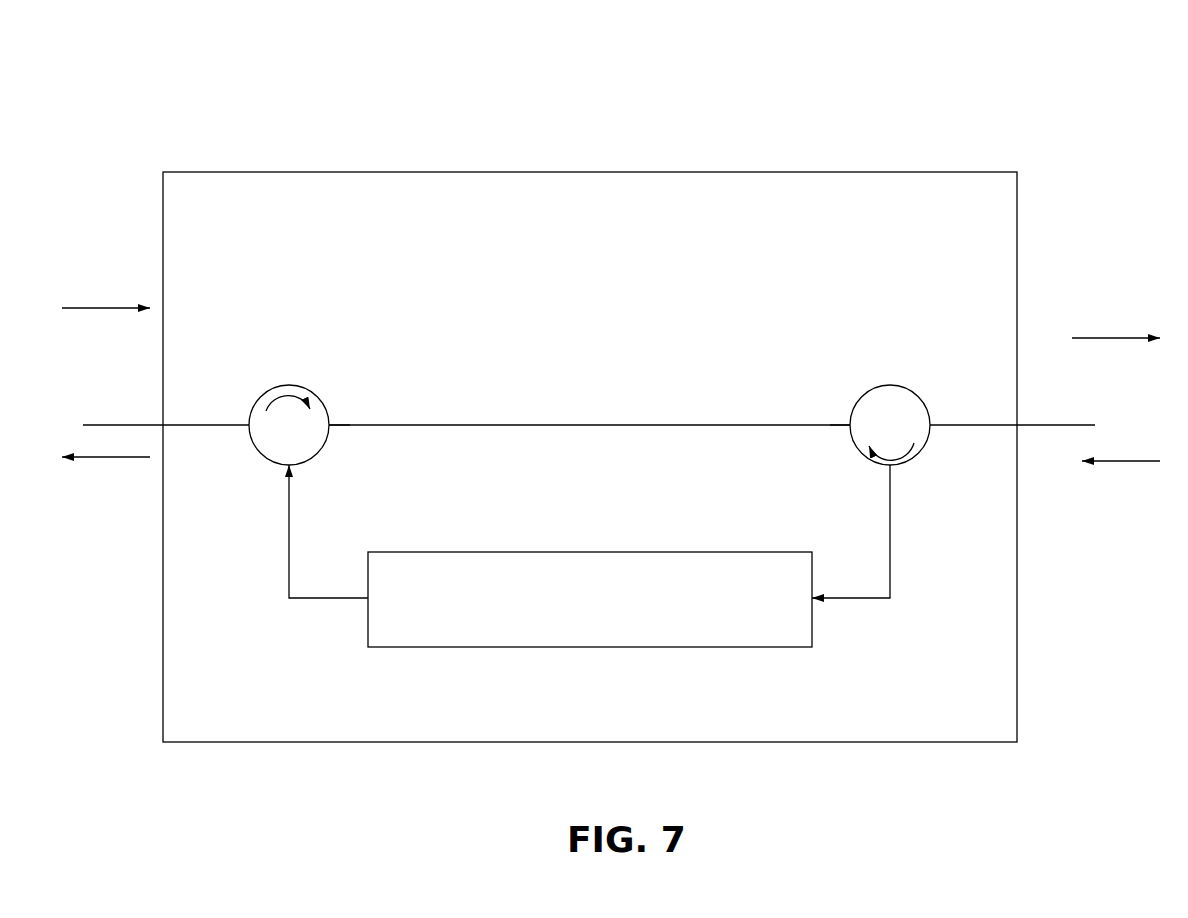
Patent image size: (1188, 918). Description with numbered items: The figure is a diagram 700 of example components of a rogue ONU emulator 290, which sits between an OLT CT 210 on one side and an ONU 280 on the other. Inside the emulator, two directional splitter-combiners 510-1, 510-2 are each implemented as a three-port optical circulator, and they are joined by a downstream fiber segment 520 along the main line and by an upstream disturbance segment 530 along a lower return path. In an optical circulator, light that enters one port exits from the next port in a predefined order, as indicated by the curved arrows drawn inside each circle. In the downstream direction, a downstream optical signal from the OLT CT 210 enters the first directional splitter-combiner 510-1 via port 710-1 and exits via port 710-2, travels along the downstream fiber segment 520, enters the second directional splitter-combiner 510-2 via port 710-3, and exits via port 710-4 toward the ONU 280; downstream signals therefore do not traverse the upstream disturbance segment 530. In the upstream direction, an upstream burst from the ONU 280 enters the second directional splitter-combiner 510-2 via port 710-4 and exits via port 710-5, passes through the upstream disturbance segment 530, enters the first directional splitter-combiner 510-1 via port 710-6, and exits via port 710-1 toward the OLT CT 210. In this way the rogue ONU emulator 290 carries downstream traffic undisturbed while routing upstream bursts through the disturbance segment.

The diagram 700 is at (157, 40).
The rogue ONU emulator 290 is at (241, 172).
The OLT CT 210 is at (106, 413).
The ONU 280 is at (1120, 431).
The directional splitter-combiner 510-1 is at (289, 385).
The directional splitter-combiner 510-2 is at (890, 385).
The downstream fiber segment 520 is at (574, 425).
The upstream disturbance segment 530 is at (590, 599).
The port 710-1 is at (243, 422).
The port 710-2 is at (333, 422).
The port 710-3 is at (843, 422).
The port 710-4 is at (938, 422).
The port 710-5 is at (908, 470).
The port 710-6 is at (272, 474).